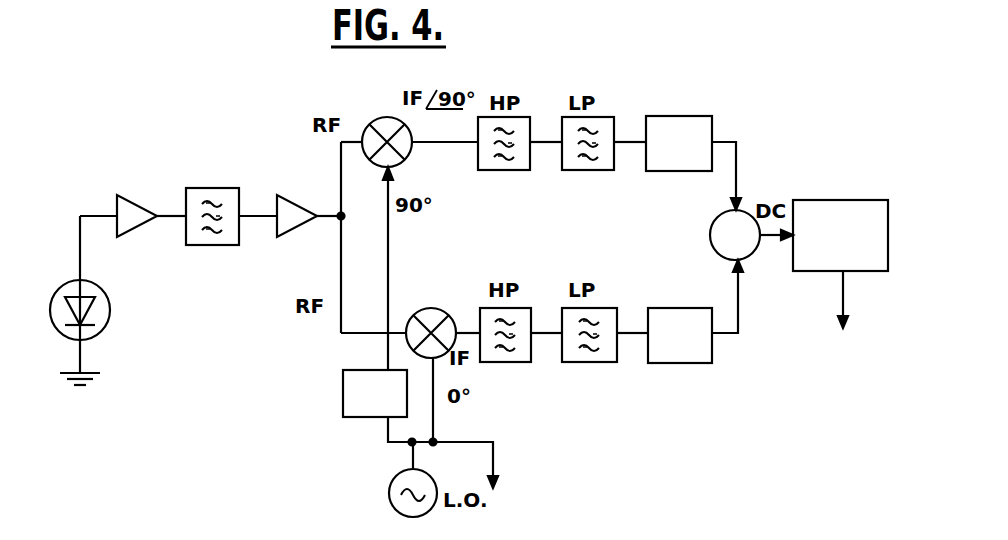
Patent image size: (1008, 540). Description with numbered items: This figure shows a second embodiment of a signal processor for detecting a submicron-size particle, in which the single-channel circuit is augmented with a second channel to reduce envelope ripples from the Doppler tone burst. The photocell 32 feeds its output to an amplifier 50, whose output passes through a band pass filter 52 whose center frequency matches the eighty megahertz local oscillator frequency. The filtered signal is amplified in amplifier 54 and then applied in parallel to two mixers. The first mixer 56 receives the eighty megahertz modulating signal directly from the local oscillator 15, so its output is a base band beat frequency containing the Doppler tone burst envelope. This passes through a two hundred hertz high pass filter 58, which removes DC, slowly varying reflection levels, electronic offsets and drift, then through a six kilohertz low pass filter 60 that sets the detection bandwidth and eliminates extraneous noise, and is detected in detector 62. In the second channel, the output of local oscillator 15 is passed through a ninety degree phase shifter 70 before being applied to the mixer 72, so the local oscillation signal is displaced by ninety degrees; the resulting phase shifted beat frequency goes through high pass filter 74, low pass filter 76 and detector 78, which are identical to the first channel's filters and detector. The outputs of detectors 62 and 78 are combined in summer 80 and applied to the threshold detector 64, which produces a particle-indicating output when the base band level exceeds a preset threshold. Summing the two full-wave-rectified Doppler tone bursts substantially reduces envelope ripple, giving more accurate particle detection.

The local oscillator 15 is at (388, 482).
The photocell 32 is at (110, 310).
The amplifier 50 is at (120, 195).
The band pass filter 52 is at (213, 188).
The amplifier 54 is at (278, 238).
The mixer 56 is at (430, 308).
The high pass filter 58 is at (527, 363).
The low pass filter 60 is at (612, 363).
The detector 62 is at (692, 364).
The threshold detector 64 is at (845, 200).
The 90° phase shifter 70 is at (343, 392).
The mixer 72 is at (370, 121).
The high pass filter 74 is at (504, 171).
The low pass filter 76 is at (587, 171).
The detector 78 is at (703, 116).
The summer 80 is at (713, 220).